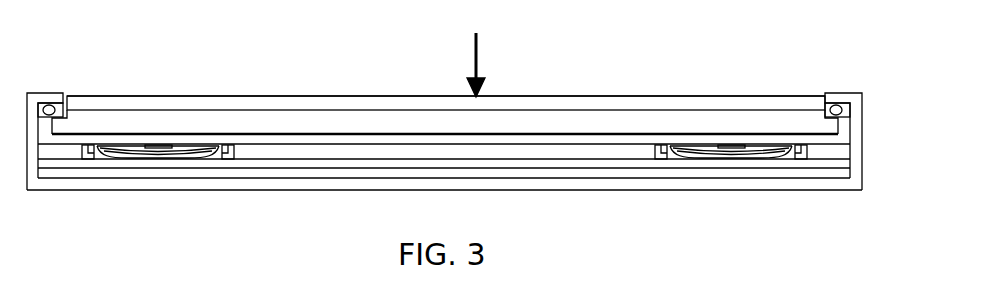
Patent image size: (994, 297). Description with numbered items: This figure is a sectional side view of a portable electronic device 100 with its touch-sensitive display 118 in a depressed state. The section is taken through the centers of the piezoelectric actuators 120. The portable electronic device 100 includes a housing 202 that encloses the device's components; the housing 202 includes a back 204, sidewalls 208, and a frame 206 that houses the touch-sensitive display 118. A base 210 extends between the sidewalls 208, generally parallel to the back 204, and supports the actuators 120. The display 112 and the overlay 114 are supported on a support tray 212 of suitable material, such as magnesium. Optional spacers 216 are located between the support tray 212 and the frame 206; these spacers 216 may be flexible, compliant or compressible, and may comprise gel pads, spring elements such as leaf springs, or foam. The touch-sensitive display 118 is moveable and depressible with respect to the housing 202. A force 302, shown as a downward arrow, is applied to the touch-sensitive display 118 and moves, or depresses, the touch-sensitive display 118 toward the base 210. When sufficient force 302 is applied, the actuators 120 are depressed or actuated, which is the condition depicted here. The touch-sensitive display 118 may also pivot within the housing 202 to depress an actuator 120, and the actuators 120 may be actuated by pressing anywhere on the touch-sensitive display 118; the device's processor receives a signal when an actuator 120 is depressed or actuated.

The portable electronic device 100 is at (855, 48).
The display 112 is at (312, 115).
The overlay 114 is at (385, 102).
The touch-sensitive display 118 is at (265, 97).
The piezoelectric actuator 120 is at (172, 148).
The housing 202 is at (627, 189).
The back 204 is at (558, 183).
The frame 206 is at (42, 92).
The sidewall 208 is at (855, 172).
The base 210 is at (470, 162).
The support tray 212 is at (405, 140).
The spacer 216 is at (837, 103).
The force 302 is at (480, 63).